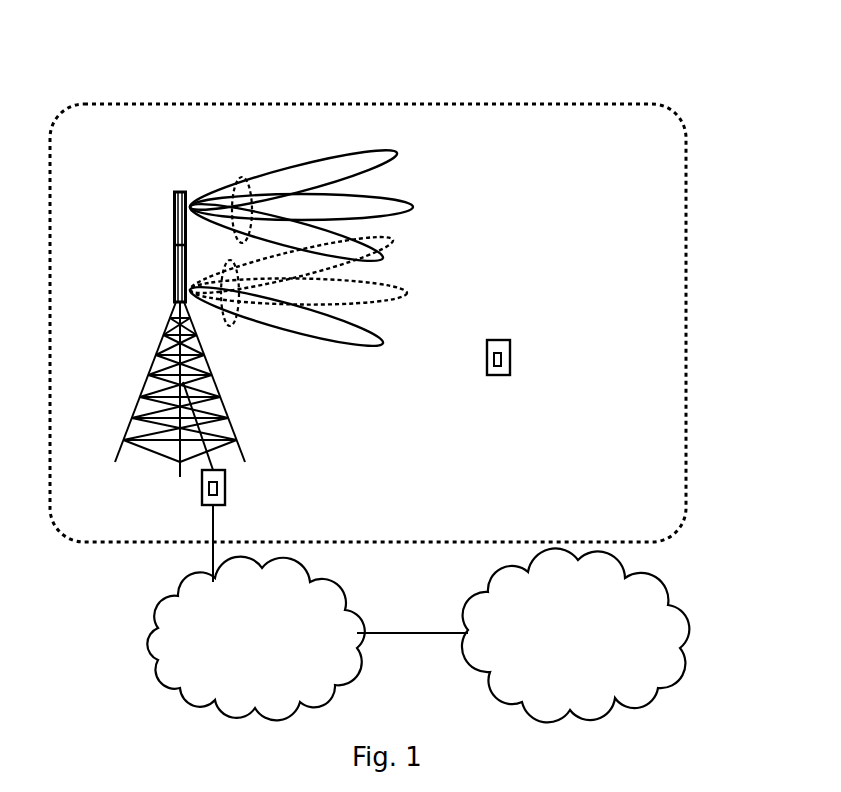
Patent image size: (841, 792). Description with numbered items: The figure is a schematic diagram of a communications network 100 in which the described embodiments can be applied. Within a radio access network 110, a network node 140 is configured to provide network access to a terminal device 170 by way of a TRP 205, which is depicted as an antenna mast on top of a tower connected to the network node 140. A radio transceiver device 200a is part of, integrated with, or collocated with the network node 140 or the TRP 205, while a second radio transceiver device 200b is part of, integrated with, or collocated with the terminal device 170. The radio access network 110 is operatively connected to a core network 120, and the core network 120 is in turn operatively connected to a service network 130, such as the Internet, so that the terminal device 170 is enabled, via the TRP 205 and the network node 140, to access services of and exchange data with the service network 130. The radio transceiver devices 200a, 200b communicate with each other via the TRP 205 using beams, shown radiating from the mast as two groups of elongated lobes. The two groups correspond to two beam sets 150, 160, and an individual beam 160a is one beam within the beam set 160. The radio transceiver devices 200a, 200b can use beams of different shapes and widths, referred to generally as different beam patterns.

The communications network 100 is at (645, 62).
The radio access network 110 is at (116, 144).
The core network 120 is at (226, 619).
The service network 130 is at (547, 604).
The network node 140 is at (225, 490).
The beam set 150 is at (245, 180).
The beam set 160 is at (230, 327).
The beam 160a is at (330, 343).
The terminal device 170 is at (490, 375).
The radio transceiver device 200a is at (202, 488).
The radio transceiver device 200b is at (488, 363).
The TRP 205 is at (174, 263).